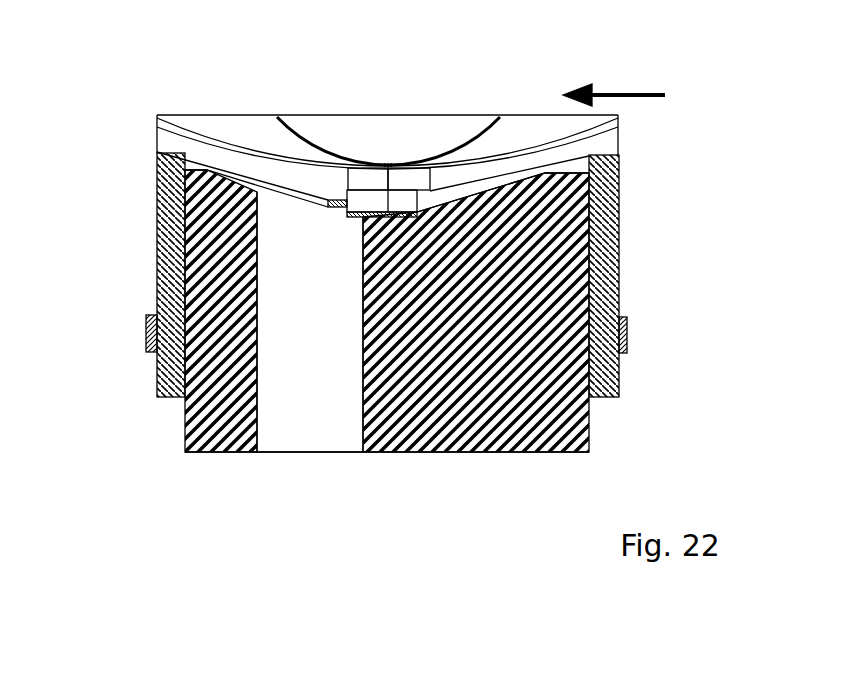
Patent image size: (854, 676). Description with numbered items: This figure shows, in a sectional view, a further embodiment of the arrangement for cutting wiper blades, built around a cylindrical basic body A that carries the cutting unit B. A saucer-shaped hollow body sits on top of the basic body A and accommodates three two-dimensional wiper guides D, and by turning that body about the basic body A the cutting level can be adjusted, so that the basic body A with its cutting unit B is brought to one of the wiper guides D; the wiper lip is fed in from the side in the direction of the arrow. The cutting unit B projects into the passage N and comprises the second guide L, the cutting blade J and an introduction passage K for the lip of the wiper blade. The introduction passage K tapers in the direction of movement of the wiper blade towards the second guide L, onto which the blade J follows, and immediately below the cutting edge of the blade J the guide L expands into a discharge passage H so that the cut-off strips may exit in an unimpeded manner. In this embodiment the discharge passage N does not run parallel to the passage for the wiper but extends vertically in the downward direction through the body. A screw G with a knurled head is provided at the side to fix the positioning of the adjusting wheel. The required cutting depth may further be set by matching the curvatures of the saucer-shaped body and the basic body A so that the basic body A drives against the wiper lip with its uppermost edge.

The basic body A is at (485, 403).
The cutting unit B is at (575, 185).
The 2D-wiper guide D is at (230, 140).
The screw G is at (625, 322).
The discharge passage H is at (328, 205).
The cutting blade J is at (176, 122).
The introduction passage K is at (407, 200).
The second guide L is at (363, 200).
The discharge passage N is at (300, 368).